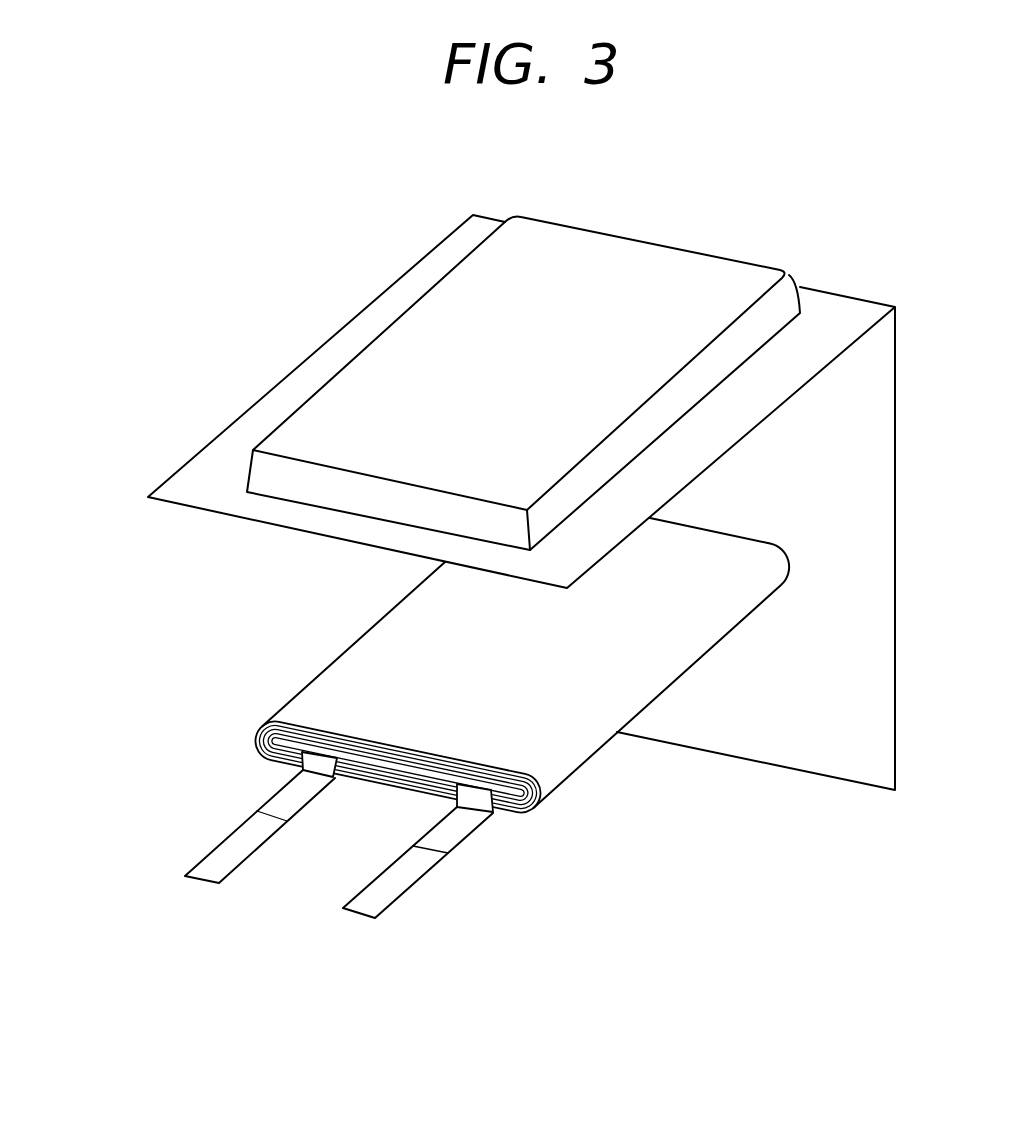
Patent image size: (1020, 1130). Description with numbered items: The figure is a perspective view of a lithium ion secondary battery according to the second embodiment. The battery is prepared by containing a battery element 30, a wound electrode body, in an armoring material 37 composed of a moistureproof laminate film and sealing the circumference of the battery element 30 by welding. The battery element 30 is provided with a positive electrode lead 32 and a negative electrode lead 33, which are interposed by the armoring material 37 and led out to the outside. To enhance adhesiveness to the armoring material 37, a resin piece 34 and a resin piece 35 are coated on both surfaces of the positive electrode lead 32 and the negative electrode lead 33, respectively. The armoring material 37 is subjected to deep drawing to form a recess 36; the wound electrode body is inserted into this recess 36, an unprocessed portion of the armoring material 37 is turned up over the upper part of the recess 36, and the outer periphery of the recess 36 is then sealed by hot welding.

The battery element 30 is at (297, 695).
The positive electrode lead 32 is at (343, 903).
The negative electrode lead 33 is at (192, 860).
The resin piece 34 is at (417, 833).
The resin piece 35 is at (275, 790).
The recess 36 is at (473, 282).
The armoring material 37 is at (293, 370).